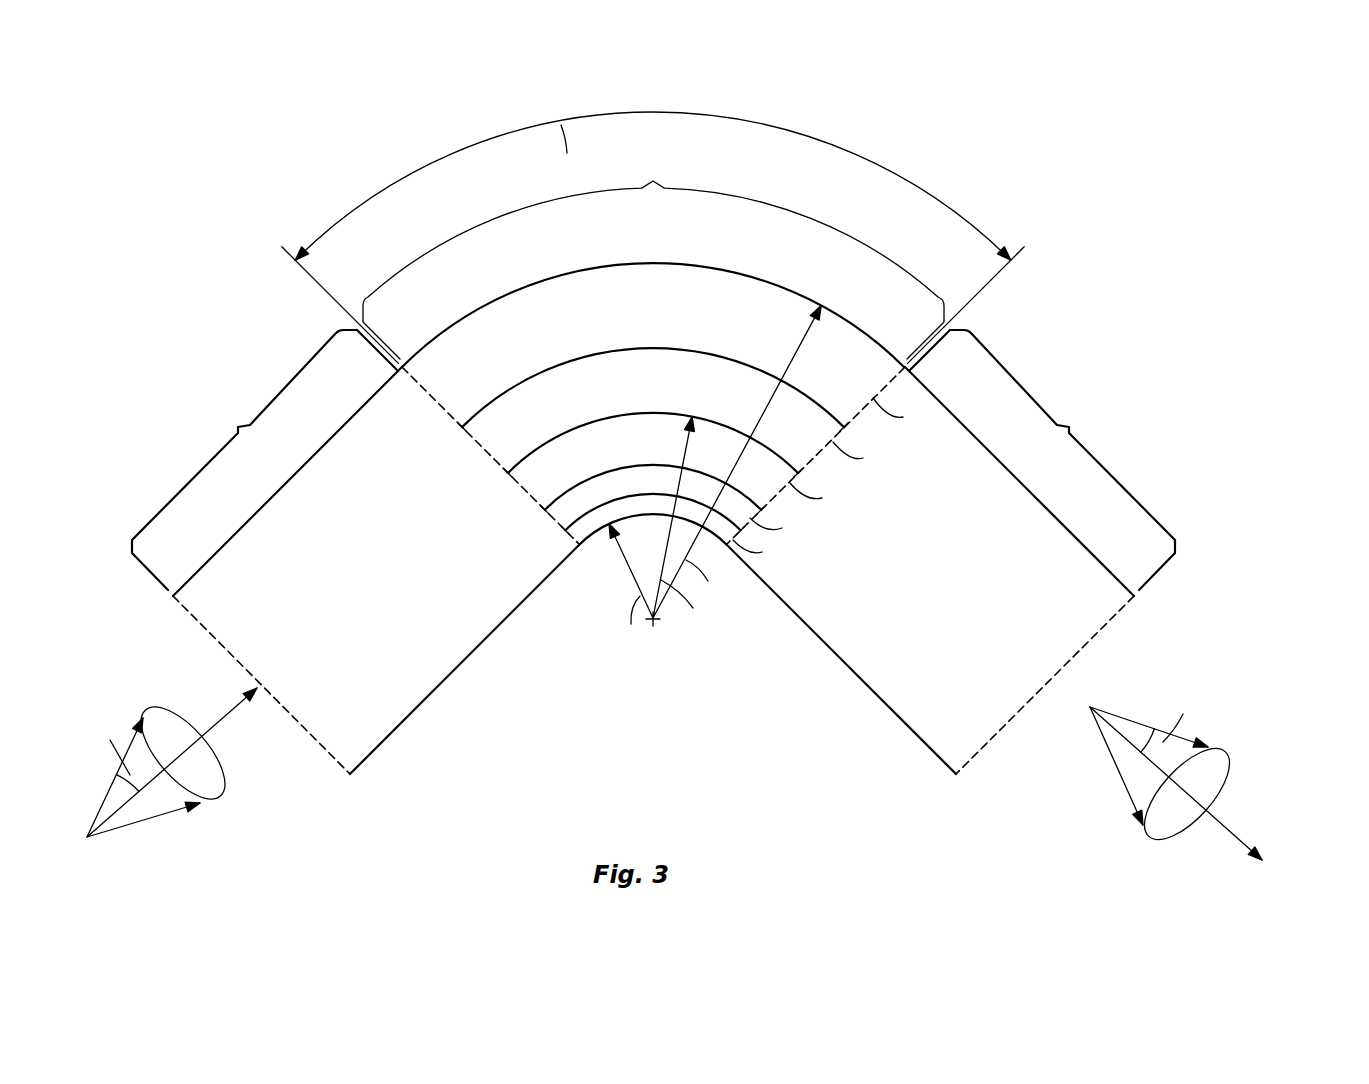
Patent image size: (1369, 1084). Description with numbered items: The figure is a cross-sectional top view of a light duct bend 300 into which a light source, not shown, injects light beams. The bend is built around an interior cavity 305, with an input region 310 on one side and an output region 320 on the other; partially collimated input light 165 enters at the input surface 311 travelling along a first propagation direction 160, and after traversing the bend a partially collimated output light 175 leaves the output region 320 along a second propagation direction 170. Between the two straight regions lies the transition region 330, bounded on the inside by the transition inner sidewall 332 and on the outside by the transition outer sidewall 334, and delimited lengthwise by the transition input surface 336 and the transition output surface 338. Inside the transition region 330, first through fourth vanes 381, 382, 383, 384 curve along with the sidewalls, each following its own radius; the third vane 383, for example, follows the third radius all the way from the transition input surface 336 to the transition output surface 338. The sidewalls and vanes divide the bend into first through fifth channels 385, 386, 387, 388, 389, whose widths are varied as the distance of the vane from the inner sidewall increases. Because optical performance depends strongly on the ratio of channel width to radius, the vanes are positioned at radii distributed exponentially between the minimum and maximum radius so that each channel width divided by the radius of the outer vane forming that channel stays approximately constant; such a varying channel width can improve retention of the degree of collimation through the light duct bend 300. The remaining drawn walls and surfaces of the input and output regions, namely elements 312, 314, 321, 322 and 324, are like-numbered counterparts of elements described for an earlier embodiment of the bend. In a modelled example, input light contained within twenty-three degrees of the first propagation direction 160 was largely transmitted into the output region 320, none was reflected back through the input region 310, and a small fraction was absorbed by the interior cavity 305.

The light duct bend 300 is at (1084, 208).
The interior cavity 305 is at (375, 643).
The input region 310 is at (265, 460).
The input surface 311 is at (327, 752).
The first inner wall 312 is at (438, 688).
The first outer wall 314 is at (248, 520).
The output region 320 is at (1042, 460).
The second end face 321 is at (1000, 728).
The second inner wall 322 is at (860, 688).
The second outer wall 324 is at (1043, 504).
The transition region 330 is at (653, 259).
The transition inner sidewall 332 is at (591, 538).
The transition outer sidewall 334 is at (762, 279).
The transition input surface 336 is at (418, 398).
The transition output surface 338 is at (892, 380).
The first vane 381 is at (568, 521).
The second vane 382 is at (548, 501).
The third vane 383 is at (511, 464).
The fourth vane 384 is at (465, 418).
The first channel 385 is at (603, 520).
The second channel 386 is at (667, 491).
The third channel 387 is at (667, 451).
The fourth channel 388 is at (667, 396).
The fifth channel 389 is at (657, 327).
The first propagation direction 160 is at (232, 711).
The partially collimated input light 165 is at (163, 831).
The second propagation direction 170 is at (1235, 835).
The partially collimated output light 175 is at (1223, 720).